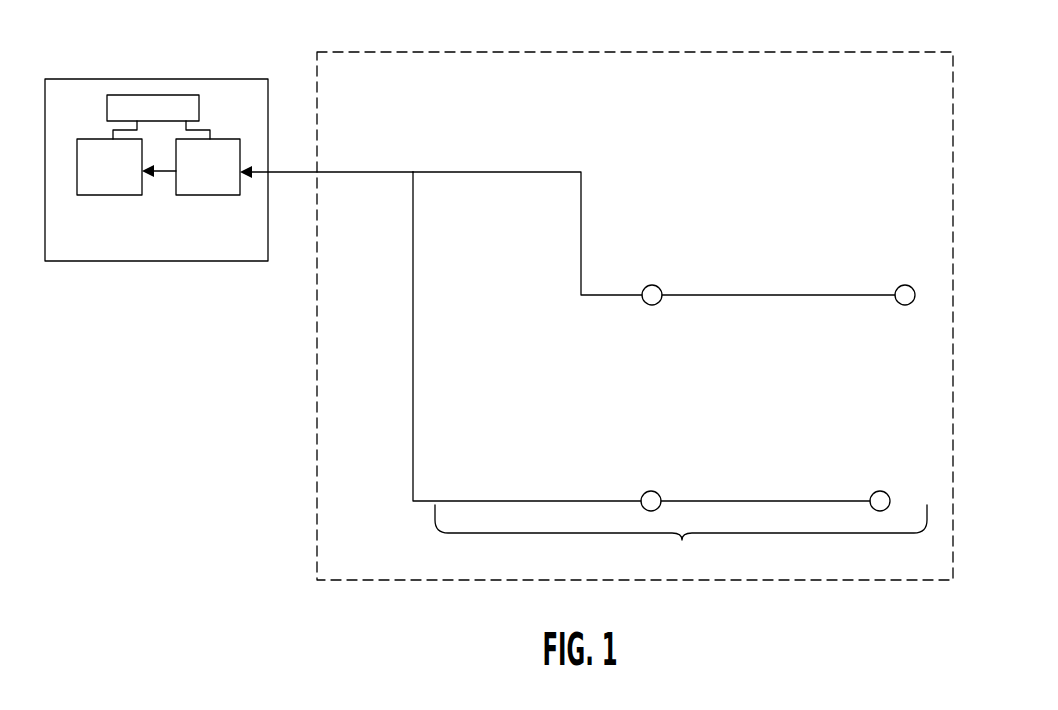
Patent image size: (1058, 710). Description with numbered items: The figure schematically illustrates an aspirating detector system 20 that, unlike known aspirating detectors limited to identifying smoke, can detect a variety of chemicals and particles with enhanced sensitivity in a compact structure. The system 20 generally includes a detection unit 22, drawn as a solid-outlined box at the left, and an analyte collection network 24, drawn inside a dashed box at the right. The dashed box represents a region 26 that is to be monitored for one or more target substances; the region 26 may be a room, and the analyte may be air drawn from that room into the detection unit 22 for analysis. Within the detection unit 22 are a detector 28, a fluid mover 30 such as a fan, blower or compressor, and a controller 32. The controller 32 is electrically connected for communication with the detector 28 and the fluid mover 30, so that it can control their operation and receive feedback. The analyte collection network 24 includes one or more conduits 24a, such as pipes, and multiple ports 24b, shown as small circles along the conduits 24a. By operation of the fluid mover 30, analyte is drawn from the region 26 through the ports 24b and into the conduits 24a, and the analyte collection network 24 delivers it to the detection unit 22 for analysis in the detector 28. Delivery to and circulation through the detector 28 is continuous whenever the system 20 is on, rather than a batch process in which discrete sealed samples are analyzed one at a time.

The aspirating detector system 20 is at (243, 493).
The detection unit 22 is at (176, 267).
The analyte collection network 24 is at (681, 540).
The conduit 24a is at (413, 280).
The port 24b is at (652, 305).
The region 26 is at (832, 583).
The detector 28 is at (107, 195).
The fluid mover 30 is at (205, 195).
The controller 32 is at (158, 95).